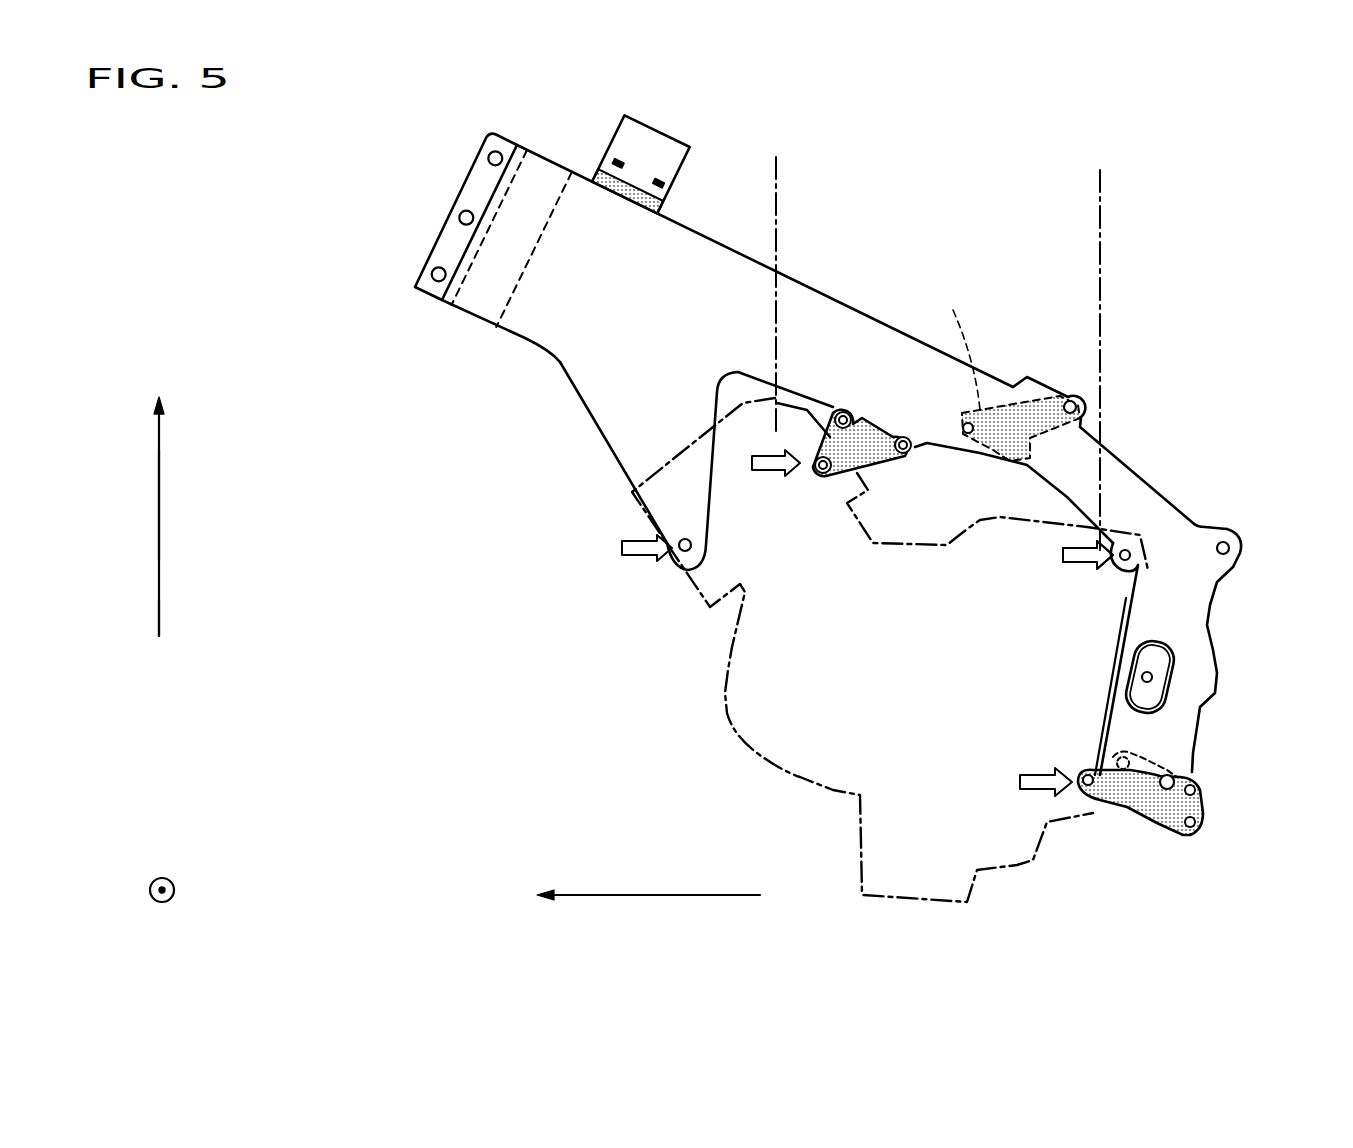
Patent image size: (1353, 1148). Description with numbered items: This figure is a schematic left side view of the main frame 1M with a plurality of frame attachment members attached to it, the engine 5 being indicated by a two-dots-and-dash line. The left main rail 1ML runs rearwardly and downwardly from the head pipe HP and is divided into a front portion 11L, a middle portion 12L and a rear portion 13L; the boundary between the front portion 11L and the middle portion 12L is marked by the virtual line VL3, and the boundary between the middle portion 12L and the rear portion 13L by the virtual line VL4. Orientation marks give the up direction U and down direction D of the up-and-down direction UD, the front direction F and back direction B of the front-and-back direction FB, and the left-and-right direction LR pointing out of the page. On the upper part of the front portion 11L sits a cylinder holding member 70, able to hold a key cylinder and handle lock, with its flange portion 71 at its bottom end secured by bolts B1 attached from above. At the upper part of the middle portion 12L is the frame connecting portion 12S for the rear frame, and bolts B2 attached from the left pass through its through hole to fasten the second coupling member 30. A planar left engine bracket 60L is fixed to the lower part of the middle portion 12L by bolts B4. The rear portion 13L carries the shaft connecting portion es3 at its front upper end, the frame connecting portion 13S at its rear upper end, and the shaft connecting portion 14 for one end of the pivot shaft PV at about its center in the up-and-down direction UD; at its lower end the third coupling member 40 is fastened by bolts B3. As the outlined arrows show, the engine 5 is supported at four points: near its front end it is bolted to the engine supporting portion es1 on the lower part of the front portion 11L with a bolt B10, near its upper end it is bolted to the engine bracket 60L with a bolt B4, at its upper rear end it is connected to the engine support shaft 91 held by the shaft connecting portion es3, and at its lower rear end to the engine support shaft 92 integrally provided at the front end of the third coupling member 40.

The main frame 1M is at (430, 168).
The head pipe HP is at (503, 232).
The left front portion 11L is at (646, 296).
The left main rail 1ML is at (555, 353).
The left middle portion 12L is at (846, 344).
The left rear portion 13L is at (1199, 618).
The frame connecting portion 12S is at (1028, 387).
The frame connecting portion 13S is at (1228, 525).
The shaft connecting portion 14 is at (1157, 658).
The pivot shaft PV is at (1141, 677).
The second coupling member 30 is at (951, 341).
The third coupling member 40 is at (1160, 817).
The engine 5 is at (752, 713).
The left engine bracket 60L is at (862, 453).
The cylinder holding member 70 is at (677, 147).
The flange portion 71 is at (670, 190).
The engine support shaft 91 is at (1123, 563).
The engine support shaft 92 is at (1086, 772).
The bolts B1 is at (616, 160).
The bolts B2 is at (1065, 396).
The bolts B3 is at (1127, 763).
The bolts B4 is at (843, 420).
The bolt B10 is at (680, 573).
The engine supporting portion es1 is at (665, 523).
The shaft connecting portion es3 is at (1117, 550).
The virtual line VL3 is at (777, 202).
The virtual line VL4 is at (1103, 200).
The up direction U is at (156, 500).
The down direction D is at (157, 641).
The up-and-down direction UD is at (158, 524).
The front direction F is at (578, 898).
The back direction B is at (722, 898).
The front-back axis FB is at (670, 895).
The left-and-right direction LR is at (176, 893).